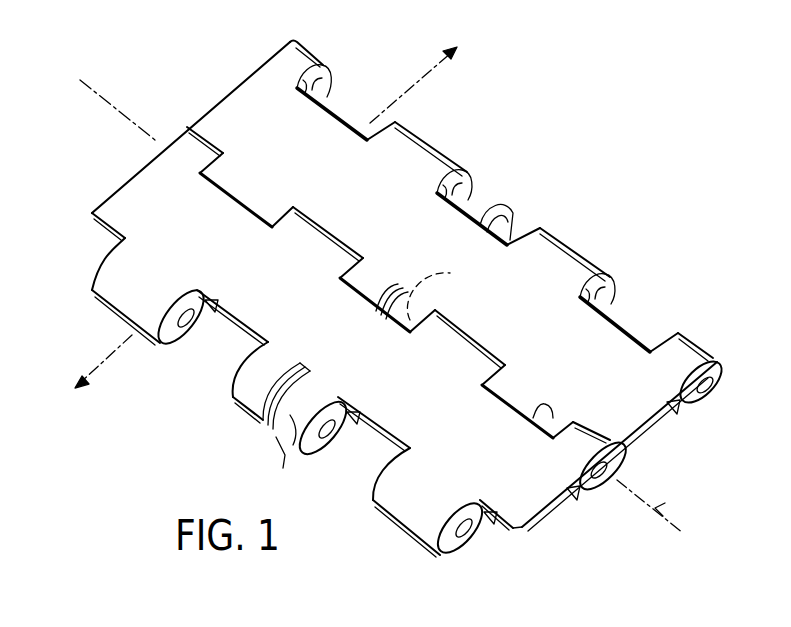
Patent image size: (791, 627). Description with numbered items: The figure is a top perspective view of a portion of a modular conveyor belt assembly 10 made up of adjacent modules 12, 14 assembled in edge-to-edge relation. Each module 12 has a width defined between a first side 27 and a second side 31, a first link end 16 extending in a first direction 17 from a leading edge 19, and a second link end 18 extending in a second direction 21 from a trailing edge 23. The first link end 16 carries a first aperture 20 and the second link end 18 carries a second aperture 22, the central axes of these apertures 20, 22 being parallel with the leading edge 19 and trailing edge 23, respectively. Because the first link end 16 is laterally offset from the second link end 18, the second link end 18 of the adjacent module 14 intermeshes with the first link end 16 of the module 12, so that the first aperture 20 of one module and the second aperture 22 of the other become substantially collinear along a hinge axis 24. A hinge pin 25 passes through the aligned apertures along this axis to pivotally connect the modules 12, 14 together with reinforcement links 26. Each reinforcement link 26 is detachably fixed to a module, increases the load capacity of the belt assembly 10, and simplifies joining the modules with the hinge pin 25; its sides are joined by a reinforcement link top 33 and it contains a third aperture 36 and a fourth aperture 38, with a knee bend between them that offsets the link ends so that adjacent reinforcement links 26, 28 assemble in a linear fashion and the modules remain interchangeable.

The modular conveyor belt assembly 10 is at (86, 59).
The module 12 is at (170, 188).
The adjacent module 14 is at (278, 76).
The first link end 16 is at (330, 70).
The first direction 17 is at (426, 86).
The second link end 18 is at (163, 340).
The leading edge 19 is at (357, 290).
The first aperture 20 is at (323, 97).
The second direction 21 is at (103, 368).
The second aperture 22 is at (195, 325).
The trailing edge 23 is at (487, 350).
The hinge axis 24 is at (677, 508).
The hinge pin 25 is at (620, 452).
The reinforcement link 26 is at (265, 421).
The first side 27 is at (650, 417).
The adjacent reinforcement link 28 is at (513, 208).
The second side 31 is at (231, 88).
The reinforcement link top 33 is at (720, 373).
The third aperture 36 is at (429, 294).
The fourth aperture 38 is at (287, 433).